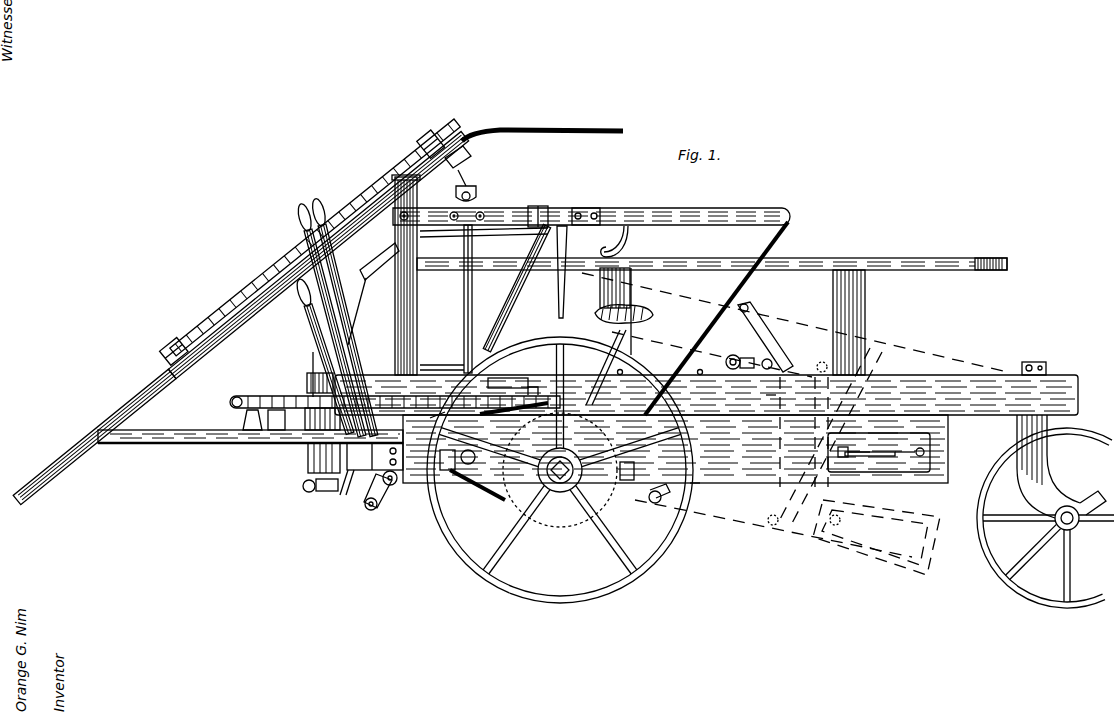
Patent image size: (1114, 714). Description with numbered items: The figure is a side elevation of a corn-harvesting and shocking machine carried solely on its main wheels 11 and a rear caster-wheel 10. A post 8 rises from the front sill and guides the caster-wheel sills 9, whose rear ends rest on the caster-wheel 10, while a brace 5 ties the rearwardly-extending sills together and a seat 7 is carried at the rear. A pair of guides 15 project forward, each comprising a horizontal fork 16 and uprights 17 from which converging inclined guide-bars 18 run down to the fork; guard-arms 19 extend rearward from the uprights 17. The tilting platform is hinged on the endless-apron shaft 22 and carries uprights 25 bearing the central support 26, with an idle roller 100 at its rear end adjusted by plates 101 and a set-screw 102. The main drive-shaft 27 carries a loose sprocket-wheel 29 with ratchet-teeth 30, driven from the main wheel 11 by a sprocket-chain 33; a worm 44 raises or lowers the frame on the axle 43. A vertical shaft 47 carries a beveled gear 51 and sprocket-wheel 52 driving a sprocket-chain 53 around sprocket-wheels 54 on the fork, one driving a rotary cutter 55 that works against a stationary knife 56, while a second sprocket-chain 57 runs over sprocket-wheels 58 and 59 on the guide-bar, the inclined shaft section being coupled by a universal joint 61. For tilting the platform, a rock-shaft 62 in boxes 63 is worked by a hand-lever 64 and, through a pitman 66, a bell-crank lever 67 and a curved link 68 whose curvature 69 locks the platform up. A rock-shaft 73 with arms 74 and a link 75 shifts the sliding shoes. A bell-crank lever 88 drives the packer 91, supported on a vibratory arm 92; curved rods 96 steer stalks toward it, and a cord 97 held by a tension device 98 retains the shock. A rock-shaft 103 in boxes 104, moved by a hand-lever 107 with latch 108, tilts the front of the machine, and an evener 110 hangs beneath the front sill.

The brace 5 is at (449, 482).
The seat 7 is at (650, 320).
The post 8 is at (311, 359).
The caster-wheel sill 9 is at (706, 393).
The caster-wheel 10 is at (1000, 452).
The main wheel 11 is at (573, 592).
The guide 15 is at (94, 436).
The horizontal fork 16 is at (250, 424).
The upright 17 is at (420, 300).
The inclined guide-bar 18 is at (160, 372).
The guard-arm 19 is at (672, 214).
The endless-apron shaft 22 is at (481, 459).
The upright 25 is at (631, 295).
The central support 26 is at (858, 262).
The main drive-shaft 27 is at (675, 455).
The sprocket-wheel 29 is at (480, 492).
The ratchet-teeth 30 is at (742, 283).
The sprocket-chain 33 is at (560, 478).
The axle 43 is at (538, 391).
The worm 44 is at (514, 402).
The vertical shaft 47 is at (472, 340).
The beveled gear 51 is at (432, 414).
The sprocket-wheel 52 is at (508, 382).
The sprocket-chain 53 is at (280, 397).
The sprocket-wheel 54 is at (242, 396).
The rotary cutter 55 is at (304, 413).
The stationary knife 56 is at (262, 414).
The sprocket-chain 57 is at (268, 290).
The sprocket-wheel 58 is at (176, 348).
The sprocket-wheel 59 is at (430, 136).
The universal joint 61 is at (478, 192).
The rock-shaft 62 is at (370, 490).
The box 63 is at (334, 493).
The hand-lever 64 is at (314, 334).
The pitman 66 is at (437, 366).
The bell-crank lever 67 is at (740, 338).
The curved link 68 is at (761, 395).
The curvature point 69 is at (818, 363).
The rock-shaft 73 is at (690, 487).
The upwardly-extending arm 74 is at (637, 468).
The link 75 is at (648, 498).
The bell-crank lever 88 is at (508, 335).
The packer 91 is at (541, 207).
The vibratory arm 92 is at (360, 292).
The curved rod 96 is at (535, 129).
The cord 97 is at (628, 250).
The tension device 98 is at (585, 200).
The roller 100 is at (938, 452).
The plate 101 is at (906, 443).
The set-screw 102 is at (858, 442).
The rock-shaft 103 is at (403, 484).
The box 104 is at (387, 506).
The hand-lever 107 is at (332, 262).
The latch 108 is at (375, 456).
The evener 110 is at (315, 472).